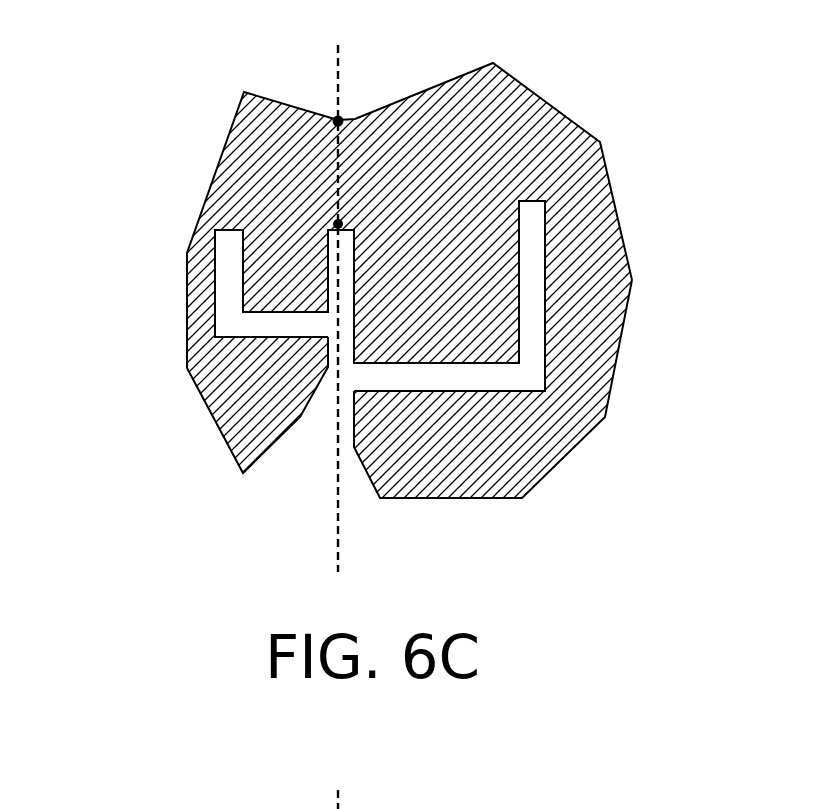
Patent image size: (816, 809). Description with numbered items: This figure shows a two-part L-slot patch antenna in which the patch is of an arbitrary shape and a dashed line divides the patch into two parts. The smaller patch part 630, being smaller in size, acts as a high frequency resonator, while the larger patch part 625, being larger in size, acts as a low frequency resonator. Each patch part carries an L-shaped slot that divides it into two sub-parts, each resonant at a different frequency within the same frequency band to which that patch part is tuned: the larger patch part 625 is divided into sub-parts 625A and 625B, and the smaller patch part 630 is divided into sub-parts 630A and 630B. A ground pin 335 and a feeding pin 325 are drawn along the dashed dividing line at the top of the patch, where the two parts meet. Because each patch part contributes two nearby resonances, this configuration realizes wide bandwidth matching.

The smaller patch part 630 is at (265, 72).
The larger patch part 625 is at (565, 90).
The sub-part of smaller patch part 630A is at (210, 413).
The sub-part of smaller patch part 630B is at (307, 317).
The sub-part of larger patch part 625A is at (498, 500).
The sub-part of larger patch part 625B is at (392, 363).
The ground pin 335 is at (338, 121).
The feeding pin 325 is at (338, 223).